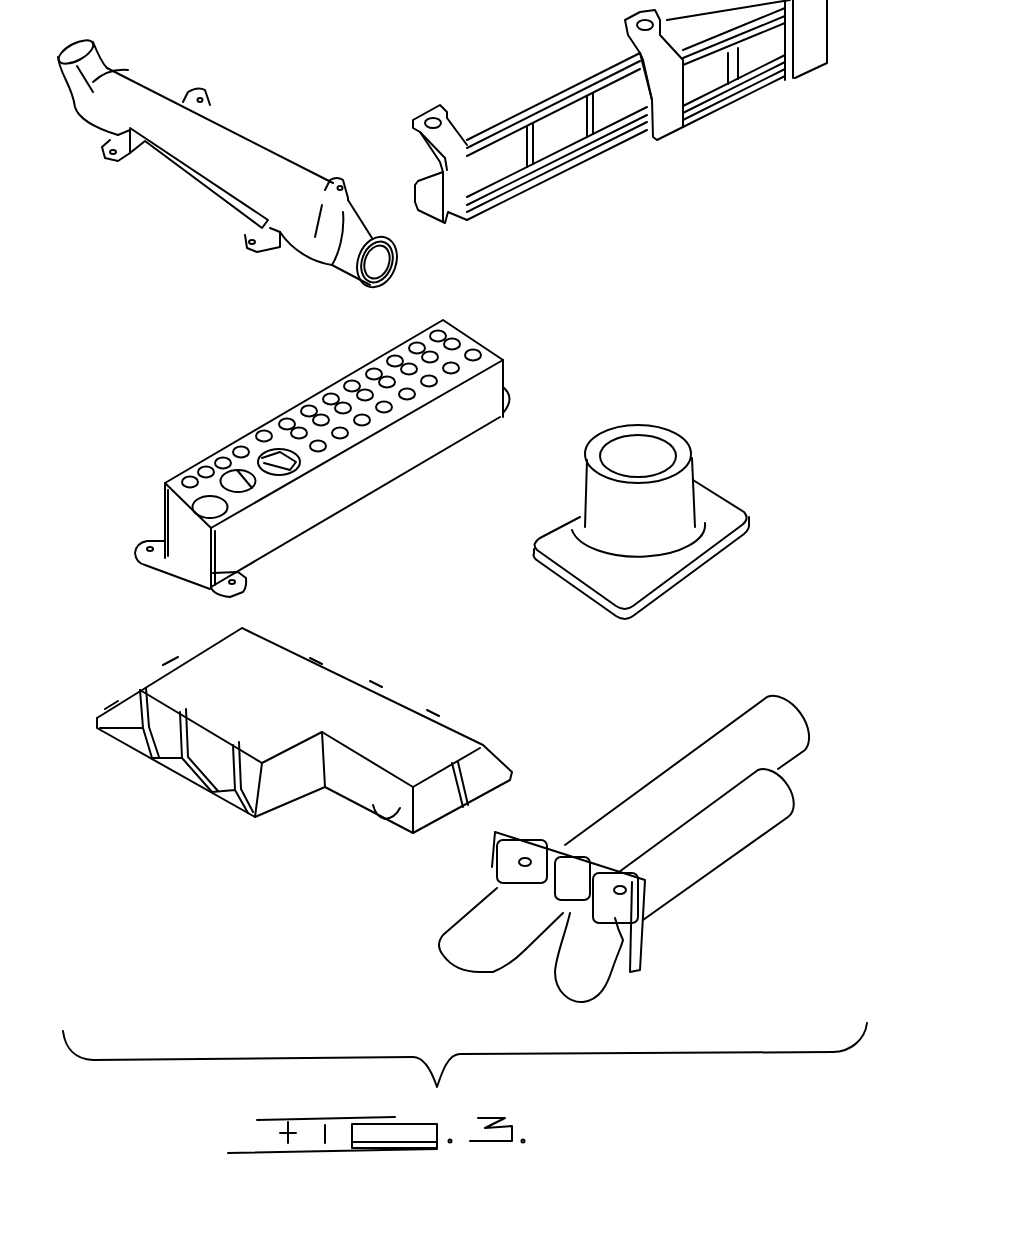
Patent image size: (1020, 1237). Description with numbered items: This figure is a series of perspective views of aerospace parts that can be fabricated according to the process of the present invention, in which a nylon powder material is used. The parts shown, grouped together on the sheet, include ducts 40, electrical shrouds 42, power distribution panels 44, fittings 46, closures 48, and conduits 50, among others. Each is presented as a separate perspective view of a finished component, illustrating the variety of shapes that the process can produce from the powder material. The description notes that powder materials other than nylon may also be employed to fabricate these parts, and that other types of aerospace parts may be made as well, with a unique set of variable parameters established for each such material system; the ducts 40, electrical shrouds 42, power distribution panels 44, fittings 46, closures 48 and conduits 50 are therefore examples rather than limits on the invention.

The ducts 40 is at (272, 123).
The electrical shrouds 42 is at (666, 166).
The power distribution panels 44 is at (238, 410).
The fittings 46 is at (757, 467).
The closures 48 is at (268, 849).
The conduits 50 is at (703, 909).